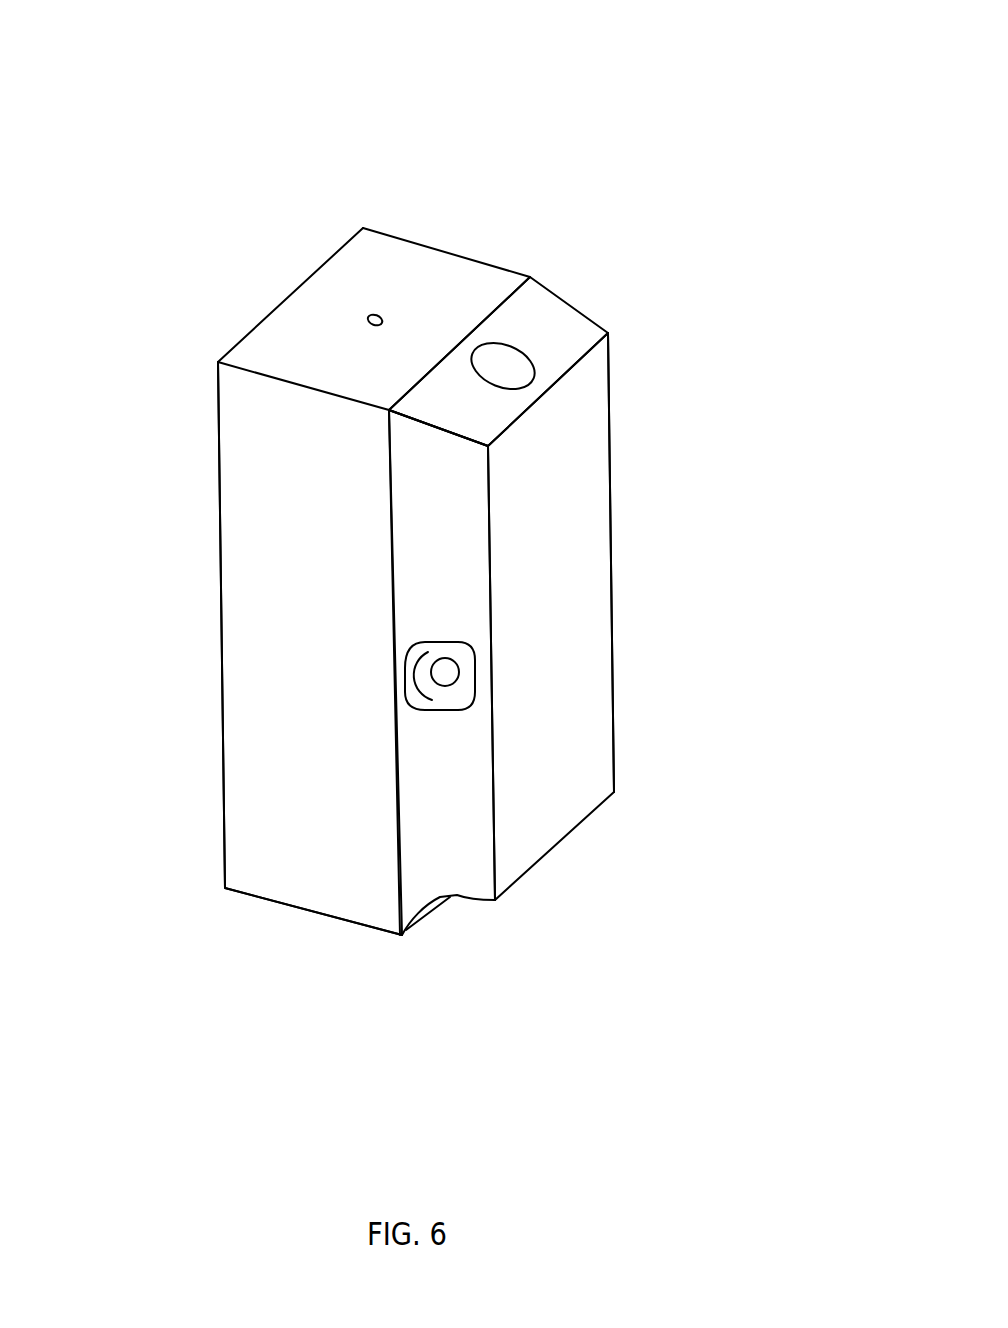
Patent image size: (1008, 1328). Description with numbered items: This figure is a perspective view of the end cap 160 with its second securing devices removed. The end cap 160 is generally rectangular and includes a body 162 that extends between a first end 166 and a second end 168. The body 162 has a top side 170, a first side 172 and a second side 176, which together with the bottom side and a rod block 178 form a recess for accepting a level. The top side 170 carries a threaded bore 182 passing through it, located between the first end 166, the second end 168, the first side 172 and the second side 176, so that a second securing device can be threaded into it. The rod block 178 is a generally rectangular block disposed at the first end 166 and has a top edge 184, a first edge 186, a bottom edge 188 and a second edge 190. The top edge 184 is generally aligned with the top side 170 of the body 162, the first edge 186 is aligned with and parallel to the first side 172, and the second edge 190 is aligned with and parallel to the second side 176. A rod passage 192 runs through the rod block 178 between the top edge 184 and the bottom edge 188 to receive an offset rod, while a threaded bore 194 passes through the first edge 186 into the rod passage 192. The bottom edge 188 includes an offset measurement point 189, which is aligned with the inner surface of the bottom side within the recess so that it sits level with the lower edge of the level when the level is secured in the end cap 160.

The end cap 160 is at (718, 167).
The body 162 is at (502, 146).
The first end 166 is at (505, 305).
The second end 168 is at (350, 238).
The top side 170 is at (313, 348).
The first side 172 is at (287, 502).
The second side 176 is at (461, 240).
The rod block 178 is at (573, 557).
The threaded bore 182 is at (376, 316).
The top edge 184 is at (460, 402).
The first edge 186 is at (455, 532).
The bottom edge 188 is at (547, 872).
The offset measurement point 189 is at (570, 837).
The second edge 190 is at (659, 583).
The rod passage 192 is at (503, 362).
The threaded bore 194 is at (445, 672).